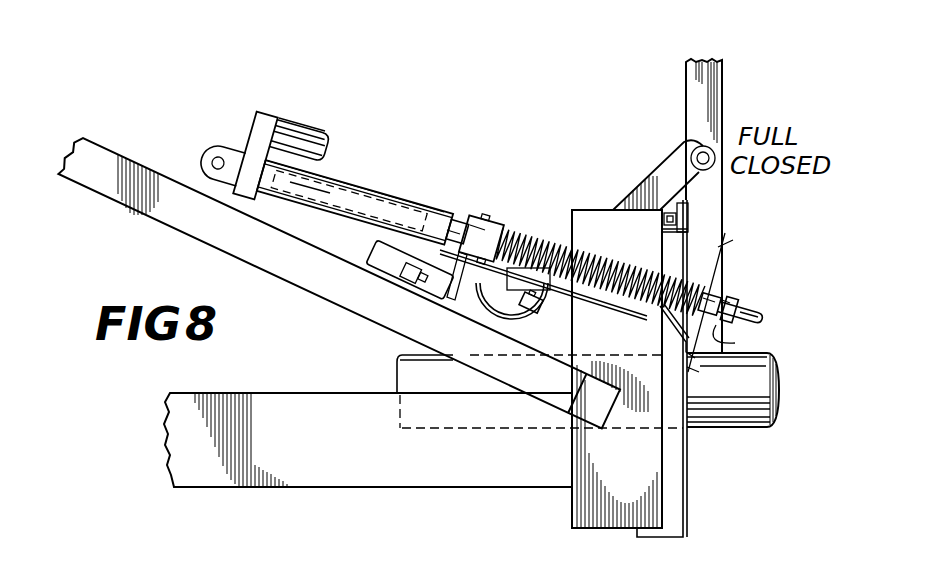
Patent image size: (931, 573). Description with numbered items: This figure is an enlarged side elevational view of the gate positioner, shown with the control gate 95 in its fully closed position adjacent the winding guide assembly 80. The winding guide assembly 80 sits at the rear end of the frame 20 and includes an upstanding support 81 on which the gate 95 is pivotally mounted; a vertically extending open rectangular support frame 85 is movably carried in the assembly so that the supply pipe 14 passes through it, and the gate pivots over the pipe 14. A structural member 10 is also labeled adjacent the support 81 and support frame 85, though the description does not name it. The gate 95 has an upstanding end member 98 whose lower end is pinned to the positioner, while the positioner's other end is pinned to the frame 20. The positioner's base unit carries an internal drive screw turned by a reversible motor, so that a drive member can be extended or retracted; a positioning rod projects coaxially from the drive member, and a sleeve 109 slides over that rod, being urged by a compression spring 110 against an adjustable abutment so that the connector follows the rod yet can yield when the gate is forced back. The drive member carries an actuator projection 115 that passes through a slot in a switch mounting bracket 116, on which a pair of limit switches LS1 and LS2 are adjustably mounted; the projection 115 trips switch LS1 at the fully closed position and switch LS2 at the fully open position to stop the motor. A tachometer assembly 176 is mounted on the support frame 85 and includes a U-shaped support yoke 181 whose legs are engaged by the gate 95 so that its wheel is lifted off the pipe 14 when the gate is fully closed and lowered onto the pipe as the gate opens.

The frame 10 is at (722, 242).
The supply pipe 14 is at (710, 420).
The frame 20 is at (424, 490).
The winding guide assembly 80 is at (686, 506).
The upstanding support 81 is at (577, 530).
The support frame 85 is at (674, 524).
The control gate 95 is at (684, 82).
The end member 98 is at (691, 104).
The sleeve 109 is at (735, 343).
The compression spring 110 is at (617, 307).
The actuator projection 115 is at (460, 298).
The switch mounting bracket 116 is at (584, 298).
The tachometer assembly 176 is at (514, 323).
The support yoke 181 is at (676, 337).
The limit switch LS1 is at (440, 267).
The limit switch LS2 is at (545, 308).